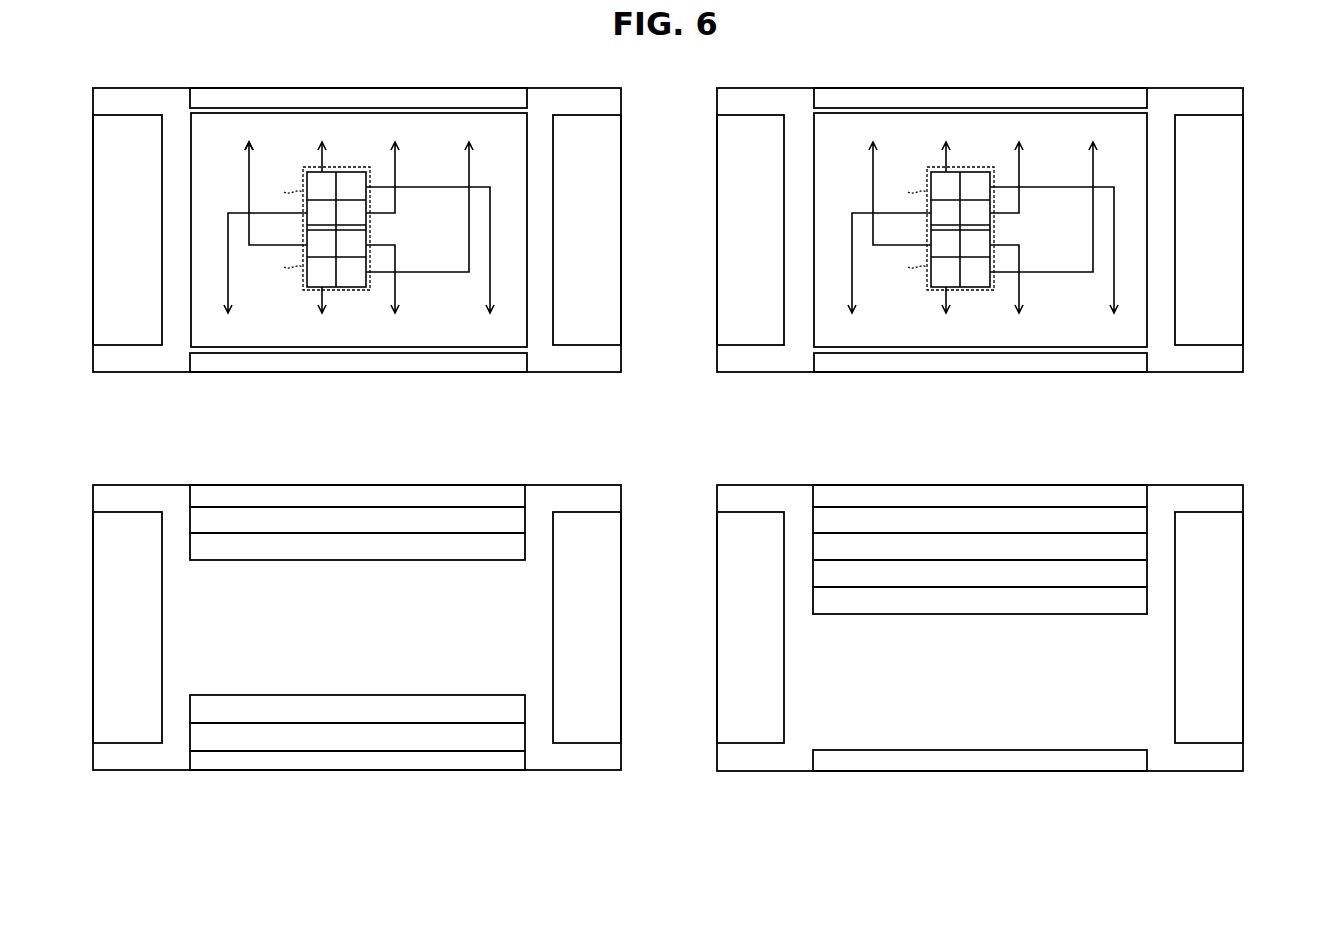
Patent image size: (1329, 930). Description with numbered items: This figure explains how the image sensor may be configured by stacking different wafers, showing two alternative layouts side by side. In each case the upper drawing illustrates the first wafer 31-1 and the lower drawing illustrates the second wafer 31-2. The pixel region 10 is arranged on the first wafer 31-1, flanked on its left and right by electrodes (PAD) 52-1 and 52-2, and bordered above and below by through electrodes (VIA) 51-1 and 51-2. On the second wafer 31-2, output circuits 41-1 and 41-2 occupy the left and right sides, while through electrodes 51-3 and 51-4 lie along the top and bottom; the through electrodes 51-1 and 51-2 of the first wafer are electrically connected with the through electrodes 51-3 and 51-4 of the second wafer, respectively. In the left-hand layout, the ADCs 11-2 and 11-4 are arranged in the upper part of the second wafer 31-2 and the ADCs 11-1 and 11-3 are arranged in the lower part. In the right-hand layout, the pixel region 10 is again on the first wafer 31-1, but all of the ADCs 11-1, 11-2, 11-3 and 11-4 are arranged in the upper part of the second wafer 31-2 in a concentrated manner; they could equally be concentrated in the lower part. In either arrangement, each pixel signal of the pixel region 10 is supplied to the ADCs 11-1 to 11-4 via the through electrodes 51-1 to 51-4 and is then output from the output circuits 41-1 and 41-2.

The pixel region 10 is at (527, 333).
The ADC 11-1 is at (410, 740).
The ADC 11-2 is at (408, 517).
The ADC 11-3 is at (472, 715).
The ADC 11-4 is at (472, 545).
The first wafer 31-1 is at (133, 374).
The second wafer 31-2 is at (133, 772).
The output circuit 41-1 is at (142, 511).
The output circuit 41-2 is at (588, 511).
The through electrode (VIA) 51-1 is at (312, 98).
The through electrode (VIA) 51-2 is at (306, 366).
The through electrode (VIA) 51-3 is at (312, 496).
The through electrode (VIA) 51-4 is at (306, 764).
The electrode (PAD) 52-1 is at (142, 113).
The electrode (PAD) 52-2 is at (588, 113).